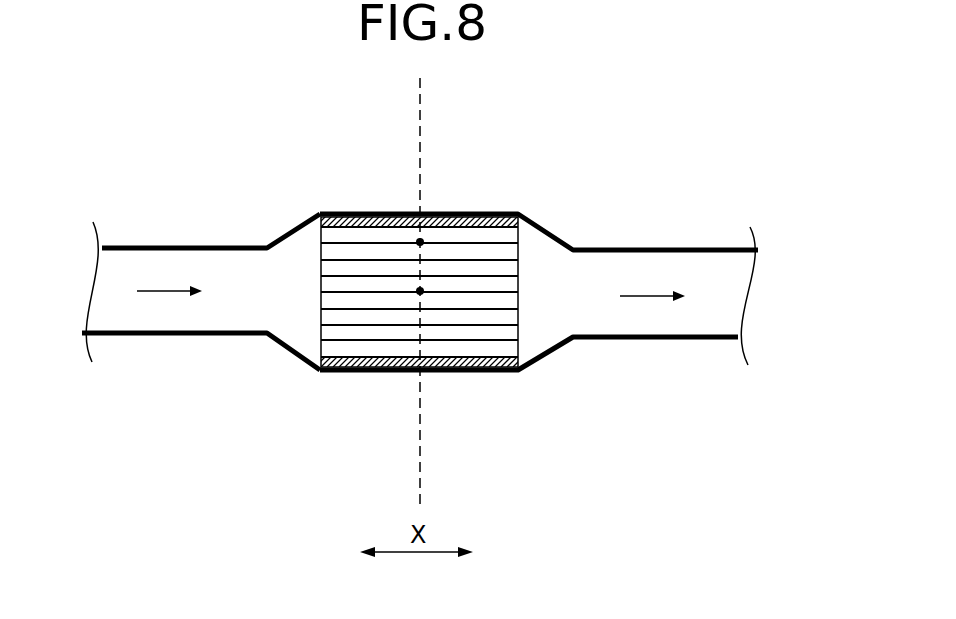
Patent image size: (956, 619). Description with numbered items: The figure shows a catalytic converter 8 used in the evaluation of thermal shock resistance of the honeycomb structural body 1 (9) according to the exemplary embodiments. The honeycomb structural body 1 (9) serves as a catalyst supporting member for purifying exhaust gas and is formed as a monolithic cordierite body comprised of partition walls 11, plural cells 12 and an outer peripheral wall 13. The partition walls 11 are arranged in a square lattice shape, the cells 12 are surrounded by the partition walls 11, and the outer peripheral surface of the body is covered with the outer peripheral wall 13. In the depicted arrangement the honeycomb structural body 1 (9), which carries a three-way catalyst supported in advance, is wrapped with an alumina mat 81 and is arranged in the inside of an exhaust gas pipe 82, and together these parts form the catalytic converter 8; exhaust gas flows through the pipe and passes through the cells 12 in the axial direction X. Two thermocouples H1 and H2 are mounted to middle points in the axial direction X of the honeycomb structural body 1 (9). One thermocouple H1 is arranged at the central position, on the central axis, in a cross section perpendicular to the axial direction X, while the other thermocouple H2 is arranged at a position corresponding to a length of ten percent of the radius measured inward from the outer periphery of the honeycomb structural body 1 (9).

The honeycomb structural body 1 is at (460, 287).
The honeycomb structural body 9 is at (433, 287).
The catalytic converter 8 is at (420, 237).
The alumina mat 81 is at (497, 225).
The exhaust gas pipe 82 is at (152, 245).
The partition walls 11 is at (350, 243).
The cells 12 is at (393, 257).
The outer peripheral wall 13 is at (478, 362).
The thermocouple H1 is at (420, 291).
The thermocouple H2 is at (420, 242).